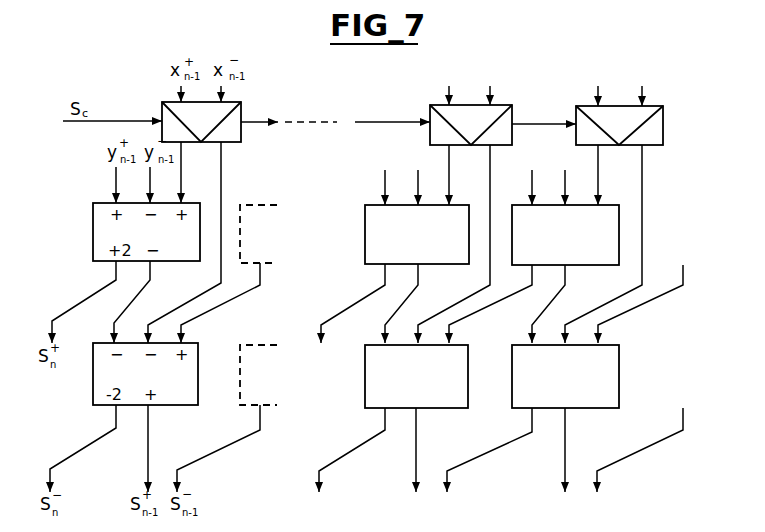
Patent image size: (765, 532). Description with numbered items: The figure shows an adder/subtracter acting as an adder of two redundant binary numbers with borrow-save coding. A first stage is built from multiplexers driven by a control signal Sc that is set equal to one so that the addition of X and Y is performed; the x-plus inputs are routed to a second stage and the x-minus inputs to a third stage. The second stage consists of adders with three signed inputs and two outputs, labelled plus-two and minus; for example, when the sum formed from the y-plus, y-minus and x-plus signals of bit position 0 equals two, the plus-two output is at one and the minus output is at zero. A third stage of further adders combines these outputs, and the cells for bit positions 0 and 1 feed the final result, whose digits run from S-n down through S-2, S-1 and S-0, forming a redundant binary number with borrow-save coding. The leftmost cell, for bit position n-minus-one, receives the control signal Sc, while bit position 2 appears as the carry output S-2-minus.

The adder cell for bit position 0 is at (613, 285).
The adder cell for bit position 1 is at (470, 285).
The carry output for bit position 2 is at (347, 391).